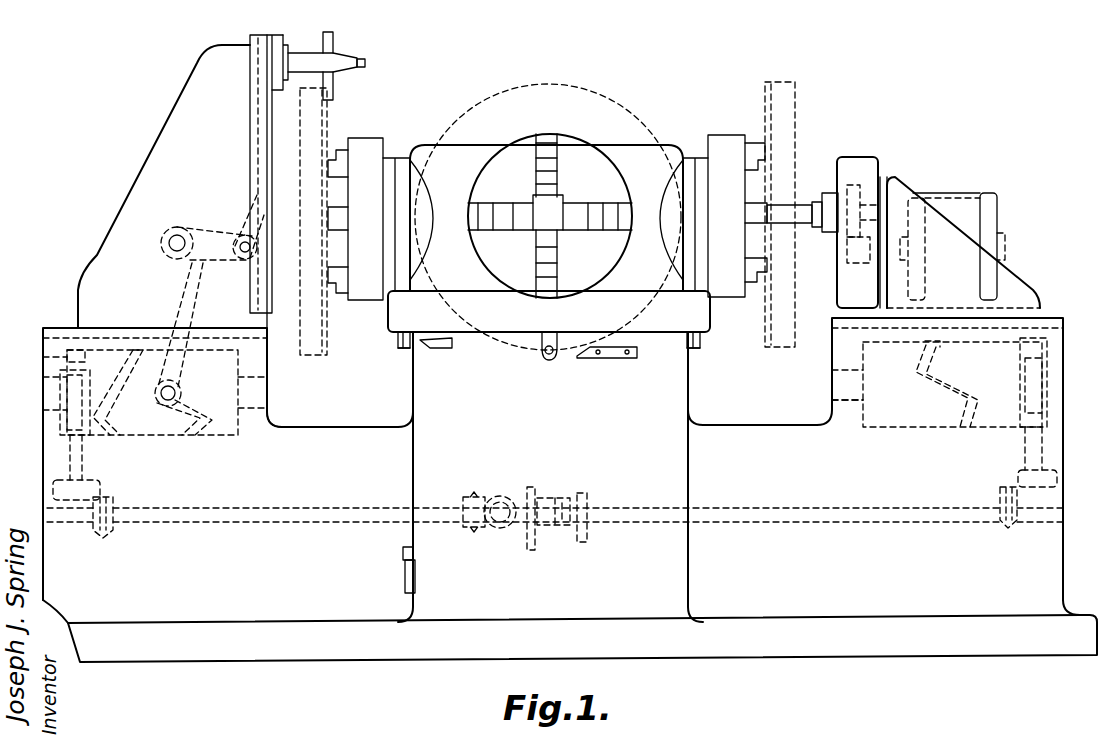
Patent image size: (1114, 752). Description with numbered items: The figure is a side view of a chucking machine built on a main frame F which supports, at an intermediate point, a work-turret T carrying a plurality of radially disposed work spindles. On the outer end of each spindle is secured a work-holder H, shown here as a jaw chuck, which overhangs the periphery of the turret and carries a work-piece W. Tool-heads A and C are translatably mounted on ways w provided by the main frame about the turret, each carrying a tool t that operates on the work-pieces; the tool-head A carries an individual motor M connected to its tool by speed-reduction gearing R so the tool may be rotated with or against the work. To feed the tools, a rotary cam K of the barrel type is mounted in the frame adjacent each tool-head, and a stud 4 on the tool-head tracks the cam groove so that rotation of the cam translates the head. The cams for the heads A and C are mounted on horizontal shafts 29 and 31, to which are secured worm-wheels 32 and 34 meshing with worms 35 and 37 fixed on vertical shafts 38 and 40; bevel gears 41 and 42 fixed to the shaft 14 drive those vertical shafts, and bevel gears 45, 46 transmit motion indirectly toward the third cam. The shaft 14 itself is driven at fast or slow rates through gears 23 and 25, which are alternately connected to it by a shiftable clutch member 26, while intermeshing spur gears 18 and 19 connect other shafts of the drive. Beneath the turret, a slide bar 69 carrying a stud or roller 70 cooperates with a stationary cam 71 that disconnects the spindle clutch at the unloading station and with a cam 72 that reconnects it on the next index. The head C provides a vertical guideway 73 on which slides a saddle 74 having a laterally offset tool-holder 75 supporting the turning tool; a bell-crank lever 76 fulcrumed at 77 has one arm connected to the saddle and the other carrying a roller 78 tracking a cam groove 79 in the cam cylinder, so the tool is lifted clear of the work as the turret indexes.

The tool-head C is at (164, 186).
The saddle 74 is at (271, 178).
The guideway 73 is at (280, 181).
The tool-holder 75 is at (305, 53).
The tool t is at (336, 92).
The work-piece W is at (315, 356).
The fulcrum 77 is at (178, 236).
The bell-crank lever 76 is at (200, 264).
The work-holder H is at (373, 138).
The work-turret T is at (546, 238).
The slide bar 69 is at (398, 341).
The stud or roller 70 is at (404, 350).
The stationary cam 71 is at (440, 350).
The cam 72 is at (608, 356).
The ways w is at (60, 328).
The rotary cam K is at (225, 438).
The stud 4 is at (138, 348).
The worm-wheel 34 is at (43, 358).
The worm 37 is at (60, 420).
The vertical shaft 40 is at (83, 447).
The bevel gear 42 is at (100, 536).
The roller 78 is at (177, 393).
The cam groove 79 is at (175, 440).
The shaft 31 is at (257, 410).
The shaft 14 is at (797, 505).
The worm-wheel 32 is at (1058, 344).
The worm 35 is at (1058, 380).
The vertical shaft 38 is at (1042, 441).
The bevel gear 41 is at (1008, 529).
The shaft 29 is at (852, 402).
The tool-head A is at (880, 168).
The speed-reduction gearing R is at (848, 246).
The motor M is at (949, 195).
The bevel gear 45 is at (472, 492).
The bevel gear 46 is at (511, 496).
The gear 25 is at (540, 482).
The shiftable clutch member 26 is at (548, 526).
The gear 23 is at (588, 493).
The spur gear 18 is at (403, 549).
The spur gear 19 is at (405, 590).
The main frame F is at (343, 571).